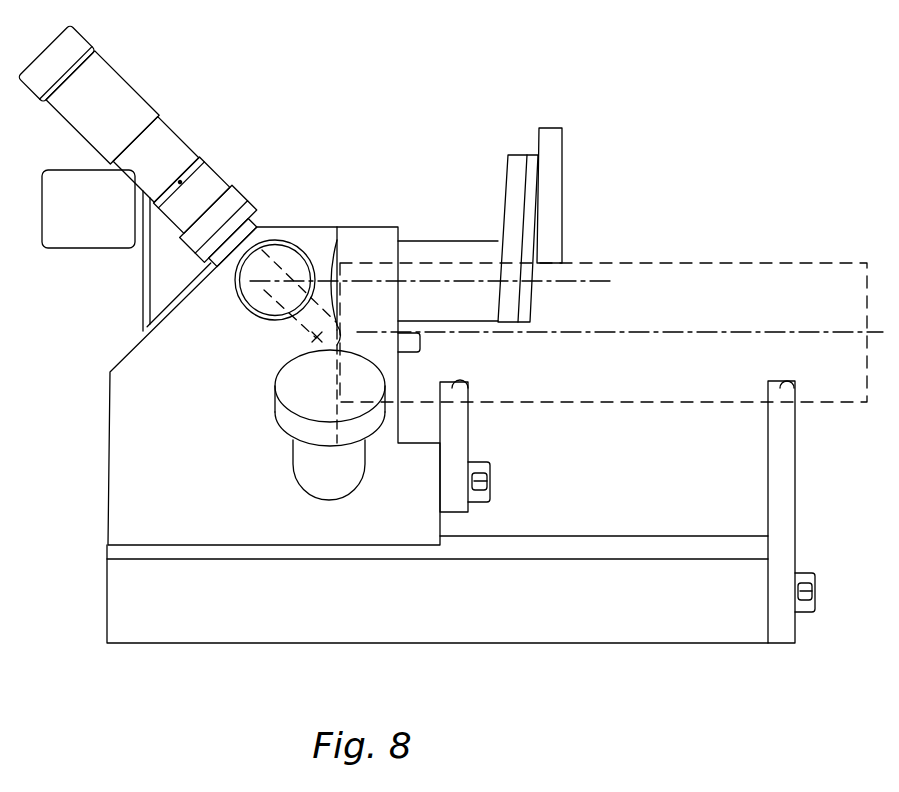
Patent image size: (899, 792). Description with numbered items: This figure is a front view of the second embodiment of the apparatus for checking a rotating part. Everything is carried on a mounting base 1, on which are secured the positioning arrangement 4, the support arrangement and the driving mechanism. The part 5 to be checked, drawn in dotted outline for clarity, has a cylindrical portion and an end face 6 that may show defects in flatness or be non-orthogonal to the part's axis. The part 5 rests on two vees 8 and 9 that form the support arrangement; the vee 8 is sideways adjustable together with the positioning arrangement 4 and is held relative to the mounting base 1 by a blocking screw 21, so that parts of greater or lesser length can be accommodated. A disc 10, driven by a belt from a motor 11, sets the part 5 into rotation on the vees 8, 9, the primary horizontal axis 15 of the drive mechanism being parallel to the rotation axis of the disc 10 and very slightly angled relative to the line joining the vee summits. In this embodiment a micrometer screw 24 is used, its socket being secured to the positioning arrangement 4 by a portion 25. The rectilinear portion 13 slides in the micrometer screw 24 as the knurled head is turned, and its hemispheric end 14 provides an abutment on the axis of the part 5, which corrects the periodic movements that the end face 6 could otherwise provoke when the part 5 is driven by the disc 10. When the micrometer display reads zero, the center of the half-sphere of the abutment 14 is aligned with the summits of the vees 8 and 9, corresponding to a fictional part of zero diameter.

The mounting base 1 is at (459, 614).
The positioning arrangement 4 is at (178, 455).
The part 5 is at (727, 311).
The end face 6 is at (337, 247).
The vee 8 is at (455, 427).
The vee 9 is at (778, 432).
The disc 10 is at (557, 193).
The motor 11 is at (73, 226).
The rectilinear portion 13 is at (275, 265).
The hemispheric end 14 is at (315, 338).
The primary horizontal axis 15 is at (597, 282).
The blocking screw 21 is at (313, 484).
The micrometer screw 24 is at (123, 97).
The portion 25 is at (257, 207).